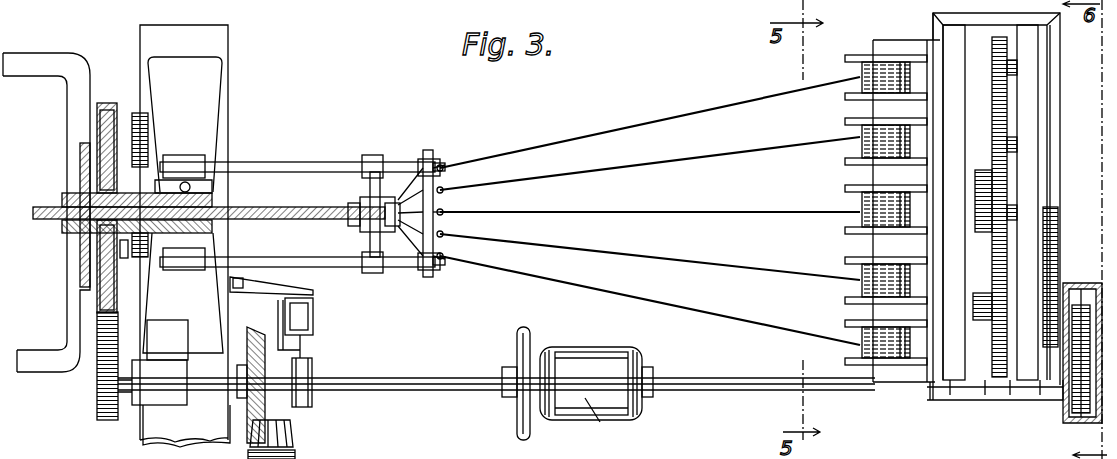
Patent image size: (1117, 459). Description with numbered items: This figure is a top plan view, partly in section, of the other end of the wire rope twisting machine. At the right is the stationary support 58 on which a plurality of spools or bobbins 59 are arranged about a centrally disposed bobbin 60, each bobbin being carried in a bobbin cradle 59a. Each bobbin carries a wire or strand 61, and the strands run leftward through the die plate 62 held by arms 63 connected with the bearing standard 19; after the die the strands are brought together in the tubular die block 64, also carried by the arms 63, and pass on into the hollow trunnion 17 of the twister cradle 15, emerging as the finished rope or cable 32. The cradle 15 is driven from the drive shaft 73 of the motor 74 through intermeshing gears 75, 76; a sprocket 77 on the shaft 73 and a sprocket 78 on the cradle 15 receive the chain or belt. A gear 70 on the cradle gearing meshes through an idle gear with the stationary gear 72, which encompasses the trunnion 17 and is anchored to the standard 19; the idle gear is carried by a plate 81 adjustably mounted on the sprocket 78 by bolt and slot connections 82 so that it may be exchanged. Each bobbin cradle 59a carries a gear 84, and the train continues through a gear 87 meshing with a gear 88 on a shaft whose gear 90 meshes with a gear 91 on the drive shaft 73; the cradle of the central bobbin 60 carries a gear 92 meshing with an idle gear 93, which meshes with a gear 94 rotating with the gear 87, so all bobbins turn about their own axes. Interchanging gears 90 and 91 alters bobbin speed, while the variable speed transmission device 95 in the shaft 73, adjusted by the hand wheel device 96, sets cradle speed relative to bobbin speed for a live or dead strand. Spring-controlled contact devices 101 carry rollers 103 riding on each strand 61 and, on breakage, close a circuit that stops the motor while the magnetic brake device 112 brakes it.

The twister cradle 15 is at (80, 82).
The hollow trunnion 17 is at (62, 193).
The upright or standard 19 is at (205, 78).
The wire rope or cable 32 is at (262, 219).
The stationary support 58 is at (1030, 45).
The spool, reel or bobbin 59 is at (845, 121).
The bobbin cradle 59a is at (882, 40).
The central reel or bobbin 60 is at (845, 232).
The wire or strand 61 is at (412, 180).
The die plate or die 62 is at (428, 277).
The arm 63 is at (290, 162).
The tubular die block 64 is at (365, 197).
The gear 70 is at (148, 120).
The stationary gear 72 is at (140, 258).
The drive shaft 73 is at (388, 378).
The motor 74 is at (325, 458).
The gear 75 is at (293, 435).
The gear 76 is at (262, 318).
The gear or sprocket 77 is at (97, 392).
The gear or sprocket 78 is at (105, 103).
The plate or member 81 is at (80, 155).
The bolt and slot connection 82 is at (130, 262).
The gear 84 is at (1010, 120).
The gear 87 is at (1058, 213).
The gear 88 is at (1053, 347).
The gear 90 is at (1078, 305).
The gear 91 is at (1082, 413).
The gear 92 is at (1000, 170).
The idle gear 93 is at (1000, 185).
The gear 94 is at (980, 320).
The variable speed transmission device 95 is at (608, 332).
The adjusting hand wheel device 96 is at (526, 330).
The contact device 101 is at (495, 238).
The roller 103 is at (445, 165).
The magnetic actuating brake device 112 is at (313, 322).